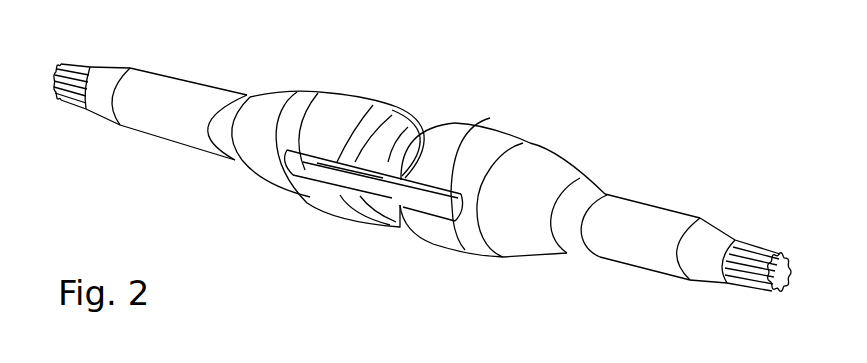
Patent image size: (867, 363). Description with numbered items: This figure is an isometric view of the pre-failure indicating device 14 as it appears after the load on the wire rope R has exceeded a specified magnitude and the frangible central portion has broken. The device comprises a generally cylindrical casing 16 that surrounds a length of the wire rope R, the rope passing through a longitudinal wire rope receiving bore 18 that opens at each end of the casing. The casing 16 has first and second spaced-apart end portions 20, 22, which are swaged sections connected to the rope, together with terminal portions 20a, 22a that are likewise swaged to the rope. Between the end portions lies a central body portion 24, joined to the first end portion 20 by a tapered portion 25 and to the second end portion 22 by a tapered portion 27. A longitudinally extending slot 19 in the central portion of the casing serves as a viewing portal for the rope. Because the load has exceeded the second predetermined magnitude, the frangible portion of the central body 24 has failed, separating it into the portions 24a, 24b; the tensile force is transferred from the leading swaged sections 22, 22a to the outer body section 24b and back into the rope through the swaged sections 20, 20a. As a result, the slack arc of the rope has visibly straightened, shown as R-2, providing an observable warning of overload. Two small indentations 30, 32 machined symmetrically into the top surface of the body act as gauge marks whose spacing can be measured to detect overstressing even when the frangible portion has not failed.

The pre-failure indicating device 14 is at (447, 108).
The casing 16 is at (433, 245).
The wire rope receiving bore 18 is at (88, 107).
The longitudinally extending slot 19 is at (323, 135).
The first end portion 20 is at (177, 97).
The terminal portion 20a is at (112, 68).
The second end portion 22 is at (628, 213).
The terminal portion 22a is at (723, 227).
The central body portion 24 is at (393, 123).
The central portion of body 24a is at (298, 163).
The outer body section 24b is at (463, 150).
The tapered portion 25 is at (265, 117).
The tapered portion 27 is at (533, 175).
The indentation 30 is at (357, 107).
The indentation 32 is at (457, 132).
The wire rope R is at (72, 67).
The straightened portion of wire rope R-2 is at (383, 177).